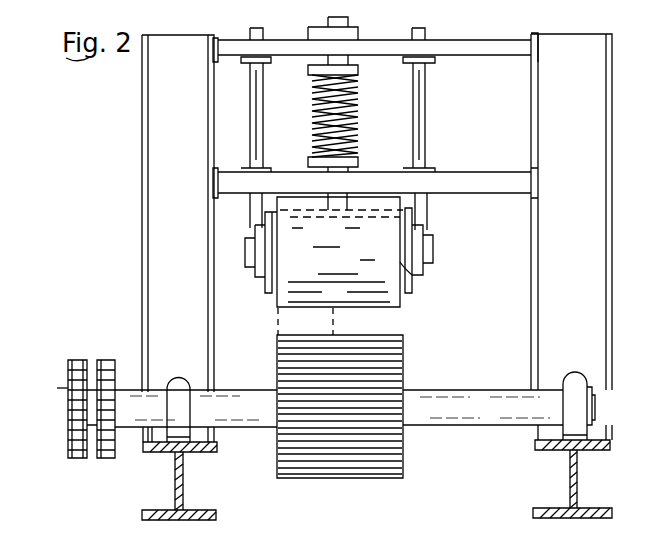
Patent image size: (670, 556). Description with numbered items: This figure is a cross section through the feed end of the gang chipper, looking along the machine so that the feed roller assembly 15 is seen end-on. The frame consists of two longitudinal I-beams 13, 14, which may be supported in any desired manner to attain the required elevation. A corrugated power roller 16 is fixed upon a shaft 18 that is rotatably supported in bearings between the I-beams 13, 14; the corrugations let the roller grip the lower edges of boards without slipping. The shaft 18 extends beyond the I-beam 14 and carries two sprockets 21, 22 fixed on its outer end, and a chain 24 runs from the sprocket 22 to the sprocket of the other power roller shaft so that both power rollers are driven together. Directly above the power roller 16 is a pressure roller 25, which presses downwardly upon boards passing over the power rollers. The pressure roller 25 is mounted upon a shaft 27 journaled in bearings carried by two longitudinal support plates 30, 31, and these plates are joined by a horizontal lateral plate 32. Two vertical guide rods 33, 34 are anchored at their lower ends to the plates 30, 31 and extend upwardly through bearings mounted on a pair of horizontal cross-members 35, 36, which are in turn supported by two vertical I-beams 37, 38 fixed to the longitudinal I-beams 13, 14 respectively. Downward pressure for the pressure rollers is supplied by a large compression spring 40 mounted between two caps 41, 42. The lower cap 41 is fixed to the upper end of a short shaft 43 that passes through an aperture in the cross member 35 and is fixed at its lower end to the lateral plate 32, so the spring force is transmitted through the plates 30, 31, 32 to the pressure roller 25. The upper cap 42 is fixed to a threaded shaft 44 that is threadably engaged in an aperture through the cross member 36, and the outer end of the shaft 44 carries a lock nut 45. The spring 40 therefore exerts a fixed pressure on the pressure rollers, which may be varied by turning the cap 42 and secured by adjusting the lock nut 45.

The longitudinal I-beam 13 is at (577, 478).
The longitudinal I-beam 14 is at (181, 494).
The feed roller assembly 15 is at (430, 316).
The power roller 16 is at (398, 373).
The shaft 18 is at (503, 380).
The sprocket 21 is at (113, 383).
The sprocket 22 is at (57, 388).
The chain 24 is at (84, 358).
The pressure roller 25 is at (283, 294).
The shaft 27 is at (412, 268).
The longitudinal support plate 30 is at (414, 230).
The longitudinal support plate 31 is at (266, 217).
The horizontal lateral plate 32 is at (405, 212).
The vertical guide rod 33 is at (425, 101).
The vertical guide rod 34 is at (254, 117).
The horizontal cross-member 35 is at (494, 178).
The horizontal cross-member 36 is at (500, 38).
The vertical I-beam 37 is at (584, 148).
The vertical I-beam 38 is at (152, 160).
The spring 40 is at (358, 105).
The cap 41 is at (358, 161).
The cap 42 is at (358, 68).
The short shaft 43 is at (348, 170).
The threaded shaft 44 is at (327, 60).
The lock nut 45 is at (356, 35).